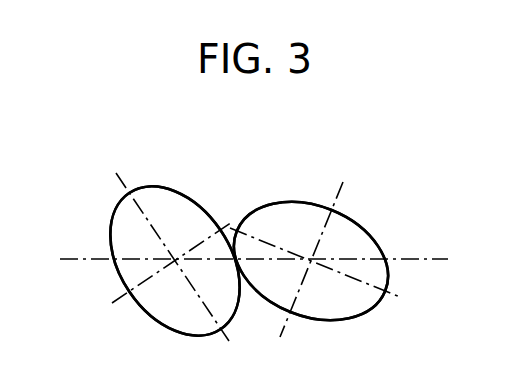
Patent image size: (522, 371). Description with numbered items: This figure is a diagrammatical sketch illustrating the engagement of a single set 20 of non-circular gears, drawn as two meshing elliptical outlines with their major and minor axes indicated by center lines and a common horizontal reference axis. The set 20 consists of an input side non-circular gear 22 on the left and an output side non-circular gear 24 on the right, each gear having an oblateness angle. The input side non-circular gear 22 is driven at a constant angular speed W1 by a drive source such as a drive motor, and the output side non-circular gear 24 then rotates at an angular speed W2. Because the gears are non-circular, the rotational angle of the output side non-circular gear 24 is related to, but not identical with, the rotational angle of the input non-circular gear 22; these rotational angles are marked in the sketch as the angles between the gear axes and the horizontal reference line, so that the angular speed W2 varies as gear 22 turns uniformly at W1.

The set of non-circular gears 20 is at (224, 190).
The input side non-circular gear 22 is at (113, 228).
The output side non-circular gear 24 is at (300, 207).
The angular speed of input side non-circular gear W1 is at (90, 263).
The angular speed of output side non-circular gear W2 is at (393, 220).